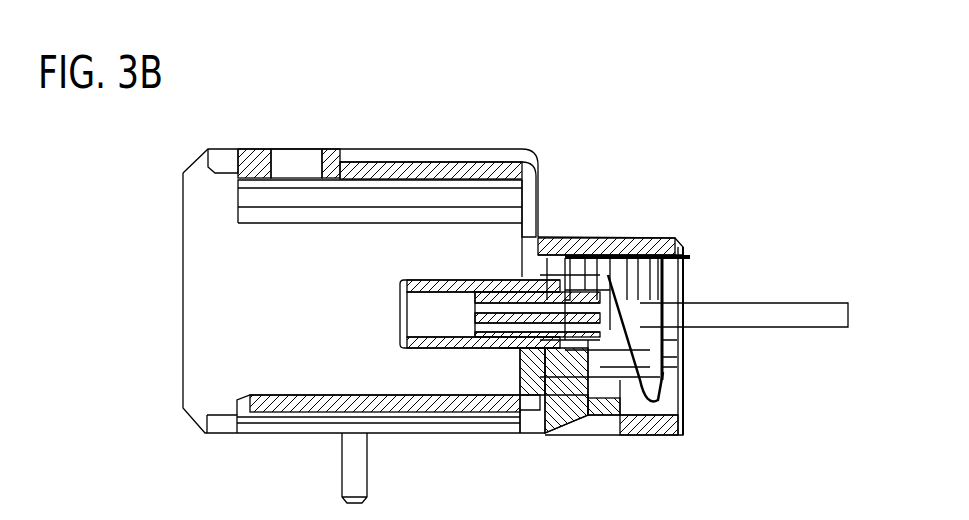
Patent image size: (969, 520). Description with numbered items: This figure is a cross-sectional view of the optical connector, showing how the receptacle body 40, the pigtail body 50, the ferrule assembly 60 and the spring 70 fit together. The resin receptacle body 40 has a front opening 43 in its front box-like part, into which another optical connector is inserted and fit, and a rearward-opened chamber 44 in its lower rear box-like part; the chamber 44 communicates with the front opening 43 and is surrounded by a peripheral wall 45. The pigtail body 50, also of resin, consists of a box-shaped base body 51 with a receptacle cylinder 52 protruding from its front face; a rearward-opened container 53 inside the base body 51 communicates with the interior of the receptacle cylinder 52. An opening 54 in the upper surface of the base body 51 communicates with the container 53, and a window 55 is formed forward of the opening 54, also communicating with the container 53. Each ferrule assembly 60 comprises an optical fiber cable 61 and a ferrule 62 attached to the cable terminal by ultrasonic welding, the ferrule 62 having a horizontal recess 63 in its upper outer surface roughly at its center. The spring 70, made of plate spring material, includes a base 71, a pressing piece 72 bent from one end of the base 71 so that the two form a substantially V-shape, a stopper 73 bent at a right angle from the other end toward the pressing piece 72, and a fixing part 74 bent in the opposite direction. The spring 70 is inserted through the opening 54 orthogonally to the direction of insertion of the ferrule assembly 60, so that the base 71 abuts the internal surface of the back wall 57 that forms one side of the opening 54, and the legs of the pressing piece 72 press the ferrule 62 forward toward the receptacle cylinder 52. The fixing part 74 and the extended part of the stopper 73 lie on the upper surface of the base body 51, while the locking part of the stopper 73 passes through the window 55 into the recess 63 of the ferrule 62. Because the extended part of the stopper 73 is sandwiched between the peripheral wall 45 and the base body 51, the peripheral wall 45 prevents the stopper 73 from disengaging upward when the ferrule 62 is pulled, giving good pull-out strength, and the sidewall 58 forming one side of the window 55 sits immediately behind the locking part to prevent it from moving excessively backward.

The receptacle body 40 is at (183, 213).
The front opening 43 is at (263, 394).
The chamber 44 is at (580, 413).
The peripheral wall 45 is at (645, 238).
The pigtail body 50 is at (550, 257).
The base body 51 is at (553, 386).
The receptacle cylinder 52 is at (437, 350).
The container 53 is at (605, 416).
The opening 54 is at (618, 238).
The window 55 is at (566, 257).
The back wall 57 is at (683, 283).
The sidewall 58 is at (586, 247).
The ferrule assembly 60 is at (822, 328).
The optical fiber cable 61 is at (815, 303).
The ferrule 62 is at (490, 350).
The recess 63 is at (560, 285).
The spring 70 is at (683, 410).
The base 71 is at (682, 348).
The pressing piece 72 is at (635, 392).
The stopper 73 is at (662, 257).
The fixing part 74 is at (690, 257).